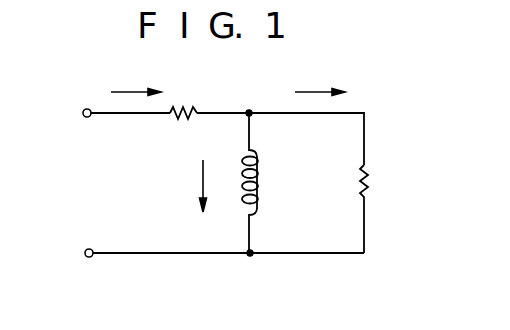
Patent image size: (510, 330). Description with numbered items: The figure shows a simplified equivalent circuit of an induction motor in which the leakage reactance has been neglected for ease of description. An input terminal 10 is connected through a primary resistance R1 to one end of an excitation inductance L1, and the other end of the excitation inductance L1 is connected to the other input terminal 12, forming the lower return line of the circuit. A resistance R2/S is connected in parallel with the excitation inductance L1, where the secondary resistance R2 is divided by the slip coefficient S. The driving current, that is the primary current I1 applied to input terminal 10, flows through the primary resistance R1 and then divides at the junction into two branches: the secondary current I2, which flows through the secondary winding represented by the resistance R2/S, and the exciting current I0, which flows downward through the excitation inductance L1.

The input terminal 10 is at (82, 113).
The input terminal 12 is at (83, 253).
The primary resistance R1 is at (183, 93).
The excitation inductance L1 is at (262, 160).
The secondary resistance R2 is at (369, 170).
The primary current I1 is at (136, 81).
The secondary current I2 is at (320, 80).
The exciting current I0 is at (187, 186).